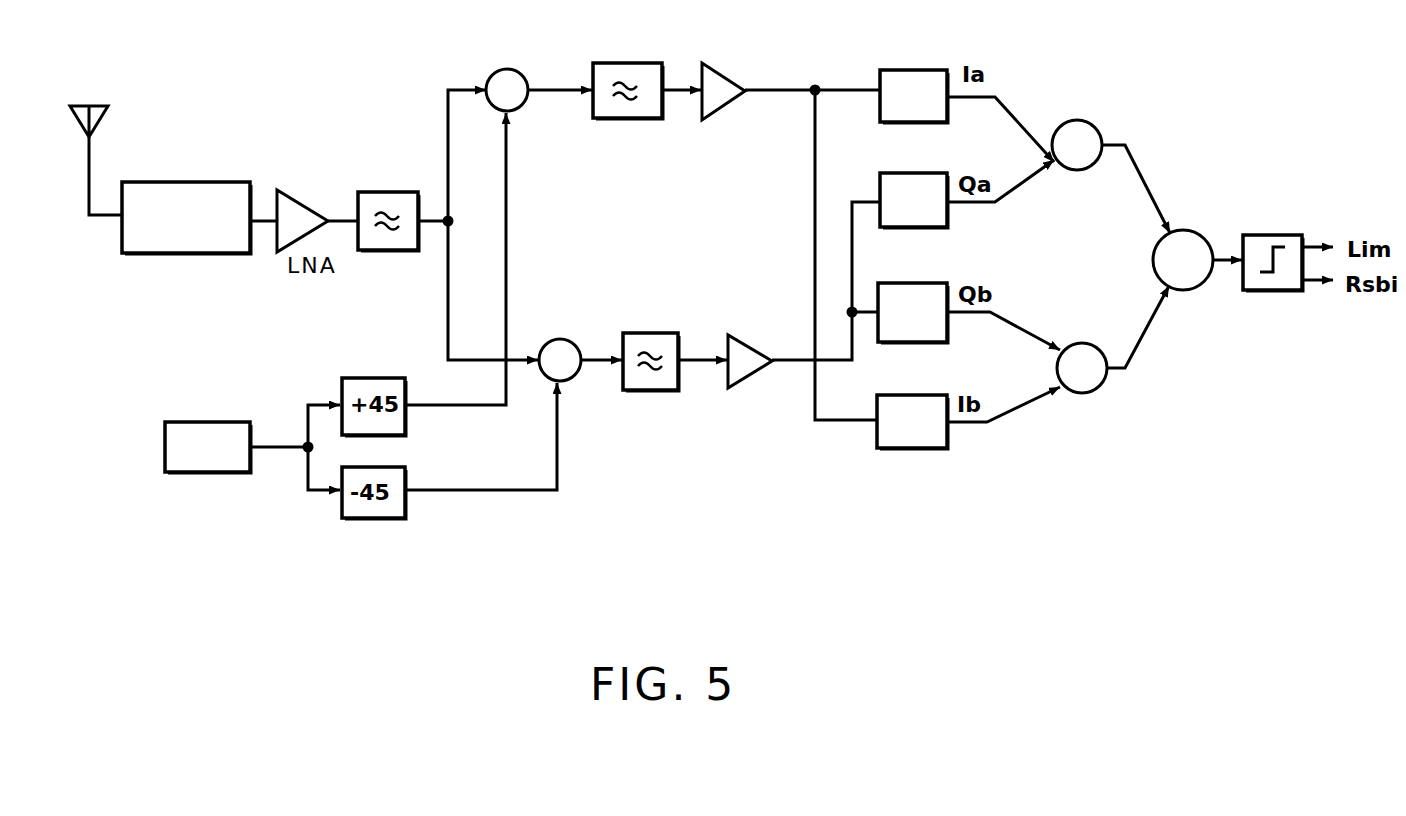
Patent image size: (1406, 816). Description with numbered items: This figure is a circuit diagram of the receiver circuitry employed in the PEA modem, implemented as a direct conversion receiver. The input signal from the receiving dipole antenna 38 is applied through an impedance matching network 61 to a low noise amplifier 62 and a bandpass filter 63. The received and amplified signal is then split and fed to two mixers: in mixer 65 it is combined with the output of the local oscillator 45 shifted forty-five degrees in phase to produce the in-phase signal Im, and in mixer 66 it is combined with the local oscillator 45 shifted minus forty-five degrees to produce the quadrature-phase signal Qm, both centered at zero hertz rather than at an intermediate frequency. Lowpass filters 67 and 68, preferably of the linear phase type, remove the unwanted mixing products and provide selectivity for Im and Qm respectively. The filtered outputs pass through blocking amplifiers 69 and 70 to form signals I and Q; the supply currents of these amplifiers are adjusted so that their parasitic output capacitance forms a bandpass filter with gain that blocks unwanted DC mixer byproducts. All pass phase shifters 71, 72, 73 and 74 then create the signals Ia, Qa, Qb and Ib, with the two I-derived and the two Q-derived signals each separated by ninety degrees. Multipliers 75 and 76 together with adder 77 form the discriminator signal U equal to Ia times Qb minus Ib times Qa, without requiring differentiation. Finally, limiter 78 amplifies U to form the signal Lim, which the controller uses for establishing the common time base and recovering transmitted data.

The dipole antenna 38 is at (110, 118).
The impedance matching network 61 is at (181, 181).
The low noise amplifier 62 is at (297, 205).
The bandpass filter 63 is at (388, 190).
The local oscillator 45 is at (209, 420).
The mixer 65 is at (509, 69).
The mixer 66 is at (551, 340).
The lowpass filter 67 is at (629, 63).
The lowpass filter 68 is at (652, 333).
The blocking amplifier 69 is at (727, 74).
The blocking amplifier 70 is at (748, 345).
The all pass phase shifter 71 is at (912, 70).
The all pass phase shifter 72 is at (932, 173).
The all pass phase shifter 73 is at (925, 283).
The all pass phase shifter 74 is at (918, 395).
The multiplier 75 is at (1077, 120).
The multiplier 76 is at (1101, 346).
The adder 77 is at (1200, 232).
The limiter 78 is at (1278, 234).